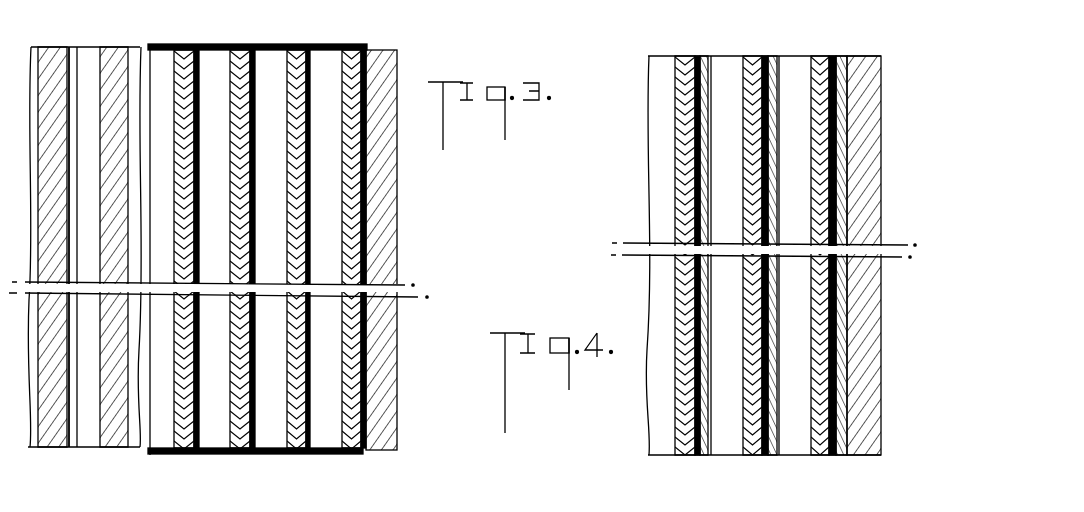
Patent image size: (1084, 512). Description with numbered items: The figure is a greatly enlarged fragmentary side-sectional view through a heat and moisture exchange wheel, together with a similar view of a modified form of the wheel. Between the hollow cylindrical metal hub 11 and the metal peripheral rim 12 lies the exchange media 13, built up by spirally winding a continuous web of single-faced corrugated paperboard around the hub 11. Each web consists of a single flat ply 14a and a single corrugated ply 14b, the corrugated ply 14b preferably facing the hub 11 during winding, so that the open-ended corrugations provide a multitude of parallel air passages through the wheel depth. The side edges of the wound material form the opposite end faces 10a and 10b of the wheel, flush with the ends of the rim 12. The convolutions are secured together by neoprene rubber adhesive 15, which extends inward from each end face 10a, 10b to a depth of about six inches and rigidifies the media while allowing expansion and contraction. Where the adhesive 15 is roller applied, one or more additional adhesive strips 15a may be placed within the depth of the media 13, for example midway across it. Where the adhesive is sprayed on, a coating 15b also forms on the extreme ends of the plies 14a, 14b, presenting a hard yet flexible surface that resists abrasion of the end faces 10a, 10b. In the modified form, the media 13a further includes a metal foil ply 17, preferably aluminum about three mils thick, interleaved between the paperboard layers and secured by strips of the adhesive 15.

In FIG. 3, the end face 10a is at (278, 43).
In FIG. 3, the end face 10b is at (262, 459).
In FIG. 3, the hub 11 is at (88, 62).
In FIG. 3, the peripheral rim 12 is at (380, 213).
In FIG. 4, the peripheral rim 12 is at (868, 147).
In FIG. 3, the media 13 is at (320, 190).
In FIG. 4, the media 13a is at (728, 289).
In FIG. 3, the flat ply 14a is at (337, 56).
In FIG. 4, the flat ply 14a is at (737, 56).
In FIG. 3, the corrugated ply 14b is at (213, 72).
In FIG. 4, the corrugated ply 14b is at (783, 460).
In FIG. 3, the adhesive 15 is at (310, 137).
In FIG. 4, the adhesive 15 is at (831, 125).
In FIG. 3, the adhesive strip 15a is at (307, 268).
In FIG. 3, the end coating 15b is at (350, 72).
In FIG. 4, the metal foil ply 17 is at (840, 56).